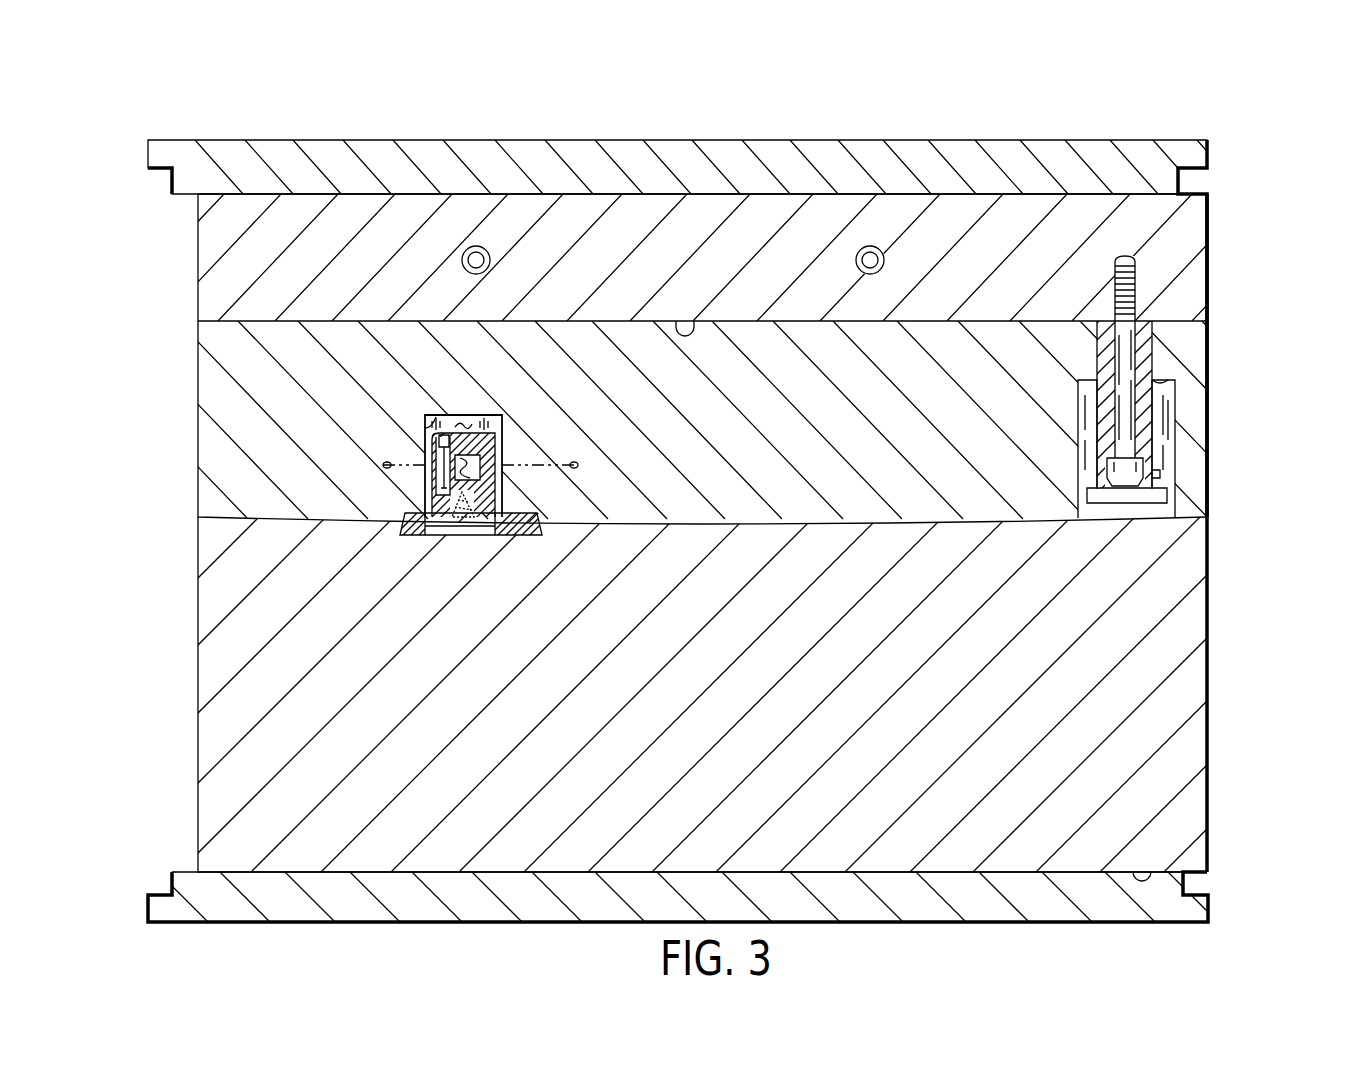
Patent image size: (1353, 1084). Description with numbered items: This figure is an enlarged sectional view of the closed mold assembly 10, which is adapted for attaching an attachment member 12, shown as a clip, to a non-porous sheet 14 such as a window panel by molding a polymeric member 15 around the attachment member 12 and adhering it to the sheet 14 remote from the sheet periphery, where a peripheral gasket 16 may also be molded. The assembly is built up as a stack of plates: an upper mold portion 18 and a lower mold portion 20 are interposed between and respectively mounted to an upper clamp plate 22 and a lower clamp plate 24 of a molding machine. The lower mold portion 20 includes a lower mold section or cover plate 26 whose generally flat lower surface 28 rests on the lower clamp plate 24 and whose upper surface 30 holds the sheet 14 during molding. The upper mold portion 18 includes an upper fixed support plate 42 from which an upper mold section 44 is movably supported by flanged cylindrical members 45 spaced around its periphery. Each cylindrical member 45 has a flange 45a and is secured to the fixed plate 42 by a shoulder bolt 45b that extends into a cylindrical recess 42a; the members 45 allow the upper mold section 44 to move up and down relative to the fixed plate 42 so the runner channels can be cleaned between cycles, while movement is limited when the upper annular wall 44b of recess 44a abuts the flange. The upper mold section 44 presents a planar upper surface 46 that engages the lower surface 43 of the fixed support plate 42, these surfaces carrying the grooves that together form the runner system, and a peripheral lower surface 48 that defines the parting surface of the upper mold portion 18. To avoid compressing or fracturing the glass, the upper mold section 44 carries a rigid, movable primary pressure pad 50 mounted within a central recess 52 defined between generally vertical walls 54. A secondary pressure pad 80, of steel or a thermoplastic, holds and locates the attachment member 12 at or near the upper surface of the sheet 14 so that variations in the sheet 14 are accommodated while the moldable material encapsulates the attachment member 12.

The mold assembly 10 is at (1145, 132).
The attachment member 12 is at (473, 500).
The non-porous sheet 14 is at (466, 532).
The polymeric member 15 is at (432, 530).
The peripheral casing or gasket 16 is at (528, 537).
The upper mold portion 18 is at (1220, 398).
The lower mold portion 20 is at (1222, 660).
The upper clamp plate 22 is at (1007, 150).
The lower clamp plate 24 is at (960, 905).
The lower mold section or cover plate 26 is at (1192, 745).
The lower surface 28 is at (1150, 868).
The upper surface 30 is at (812, 524).
The upper fixed support plate 42 is at (1188, 210).
The cylindrical recess 42a is at (1140, 258).
The lower surface of fixed support plate 43 is at (690, 321).
The upper mold section 44 is at (1198, 432).
The recess 44a is at (1168, 477).
The upper annular wall 44b is at (1195, 362).
The flanged cylindrical member 45 is at (1077, 425).
The flange 45a is at (1090, 490).
The shoulder bolt 45b is at (1108, 348).
The planar upper surface 46 is at (628, 321).
The lower surface 48 is at (693, 527).
The primary pressure pad 50 is at (497, 417).
The central recess 52 is at (463, 417).
The vertical walls 54 is at (437, 417).
The secondary pressure pad 80 is at (432, 492).